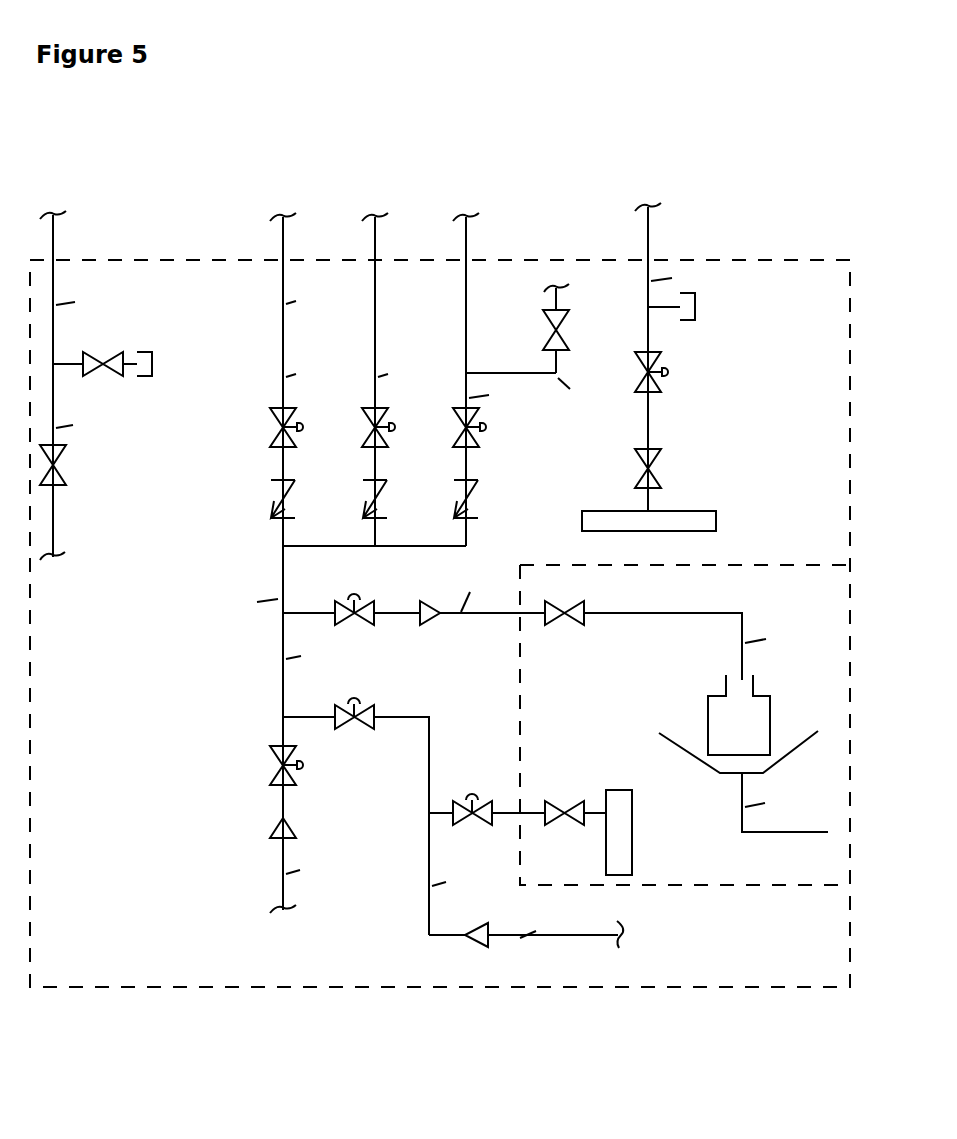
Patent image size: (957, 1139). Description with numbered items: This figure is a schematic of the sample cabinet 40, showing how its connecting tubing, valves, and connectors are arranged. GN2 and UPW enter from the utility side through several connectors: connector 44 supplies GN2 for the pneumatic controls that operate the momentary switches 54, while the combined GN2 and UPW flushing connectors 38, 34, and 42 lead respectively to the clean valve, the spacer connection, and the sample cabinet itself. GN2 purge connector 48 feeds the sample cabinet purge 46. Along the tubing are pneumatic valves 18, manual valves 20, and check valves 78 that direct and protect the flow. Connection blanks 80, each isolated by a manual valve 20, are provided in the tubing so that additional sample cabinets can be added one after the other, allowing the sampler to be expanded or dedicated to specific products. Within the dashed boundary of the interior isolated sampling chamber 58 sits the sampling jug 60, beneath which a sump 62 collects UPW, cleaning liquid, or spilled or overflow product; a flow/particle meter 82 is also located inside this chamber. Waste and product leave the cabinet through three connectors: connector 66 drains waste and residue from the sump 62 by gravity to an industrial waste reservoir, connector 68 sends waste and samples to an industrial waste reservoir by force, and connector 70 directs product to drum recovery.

The sample cabinet 40 is at (541, 156).
The connector 44 is at (55, 262).
The connector 38 is at (285, 262).
The connector 34 is at (377, 262).
The connector 42 is at (468, 262).
The GN2 purge connector 48 is at (650, 262).
The connection blanks 80 is at (152, 352).
The manual valves 20 is at (107, 372).
The pneumatic valves 18 is at (479, 440).
The check valves 78 is at (268, 504).
The sample cabinet purge 46 is at (718, 516).
The interior isolated sampling chamber 58 is at (782, 560).
The momentary switches 54 is at (98, 615).
The sampling jug 60 is at (720, 715).
The sump 62 is at (800, 753).
The connector 66 is at (793, 856).
The connector 68 is at (284, 897).
The connector 70 is at (705, 926).
The flow/particle meter 82 is at (603, 840).